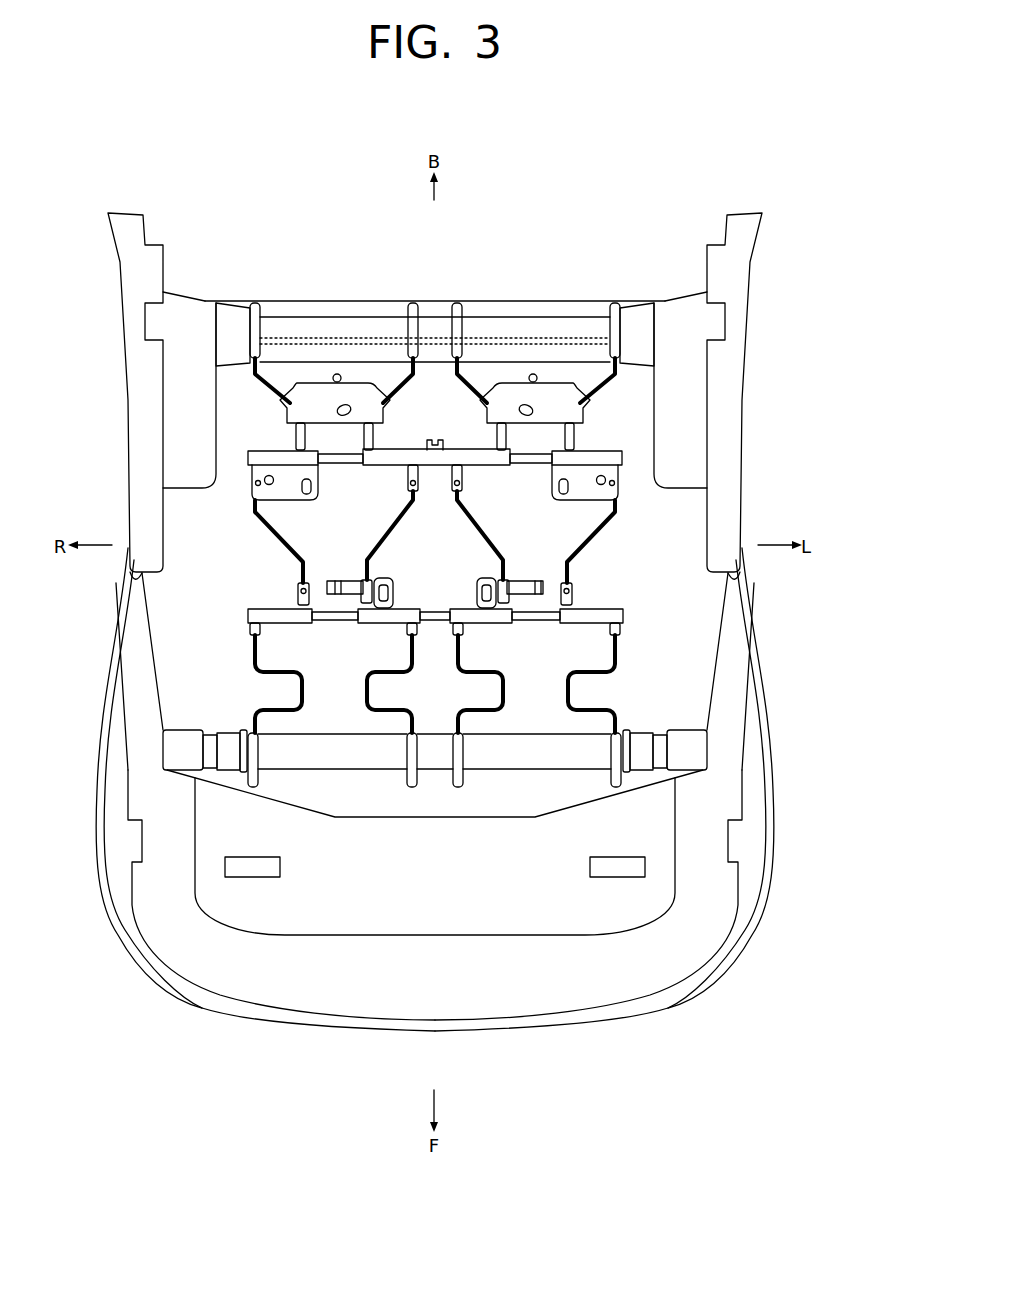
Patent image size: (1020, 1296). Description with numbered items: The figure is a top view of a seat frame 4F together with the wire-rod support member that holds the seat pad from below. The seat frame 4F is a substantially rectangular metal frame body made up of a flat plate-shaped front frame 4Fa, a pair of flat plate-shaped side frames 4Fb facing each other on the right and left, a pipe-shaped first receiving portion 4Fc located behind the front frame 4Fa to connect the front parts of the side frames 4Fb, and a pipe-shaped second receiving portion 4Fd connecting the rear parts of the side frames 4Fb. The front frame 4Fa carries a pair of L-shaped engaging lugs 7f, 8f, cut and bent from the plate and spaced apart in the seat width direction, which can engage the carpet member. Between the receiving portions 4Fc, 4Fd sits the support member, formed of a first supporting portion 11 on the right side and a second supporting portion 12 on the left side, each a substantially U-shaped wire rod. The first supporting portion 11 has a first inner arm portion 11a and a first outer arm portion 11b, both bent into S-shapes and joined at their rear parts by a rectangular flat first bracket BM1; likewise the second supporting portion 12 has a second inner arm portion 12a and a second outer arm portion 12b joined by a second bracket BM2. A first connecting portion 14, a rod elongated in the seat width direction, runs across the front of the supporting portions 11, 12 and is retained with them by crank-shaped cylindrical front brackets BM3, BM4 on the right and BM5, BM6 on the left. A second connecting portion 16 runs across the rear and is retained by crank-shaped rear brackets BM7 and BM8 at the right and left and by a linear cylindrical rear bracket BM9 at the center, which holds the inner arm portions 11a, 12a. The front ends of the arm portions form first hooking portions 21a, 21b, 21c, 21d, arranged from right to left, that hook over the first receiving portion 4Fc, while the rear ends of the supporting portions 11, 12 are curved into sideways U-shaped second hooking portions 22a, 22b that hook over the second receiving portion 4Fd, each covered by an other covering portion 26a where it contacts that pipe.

The seat frame 4F is at (666, 211).
The front frame 4Fa is at (497, 993).
The side frames 4Fb is at (137, 645).
The first receiving portion 4Fc is at (640, 735).
The second receiving portion 4Fd is at (512, 327).
The engaging lug 7f is at (257, 877).
The engaging lug 8f is at (612, 877).
The first supporting portion 11 is at (290, 875).
The first inner arm portion 11a is at (387, 713).
The first outer arm portion 11b is at (280, 715).
The second supporting portion 12 is at (490, 875).
The second inner arm portion 12a is at (483, 713).
The second outer arm portion 12b is at (593, 713).
The first connecting portion 14 is at (440, 612).
The second connecting portion 16 is at (329, 452).
The first hooking portion 21a is at (255, 793).
The first hooking portion 21b is at (412, 793).
The first hooking portion 21c is at (458, 793).
The first hooking portion 21d is at (616, 793).
The second hooking portion 22a is at (259, 328).
The second hooking portion 22b is at (611, 328).
The other covering portion 26a is at (253, 308).
The first bracket BM1 is at (365, 395).
The second bracket BM2 is at (545, 395).
The front bracket BM3 is at (262, 612).
The front bracket BM4 is at (368, 624).
The front bracket BM5 is at (503, 624).
The front bracket BM6 is at (608, 612).
The rear bracket BM7 is at (280, 457).
The rear bracket BM8 is at (590, 457).
The rear bracket BM9 is at (392, 455).